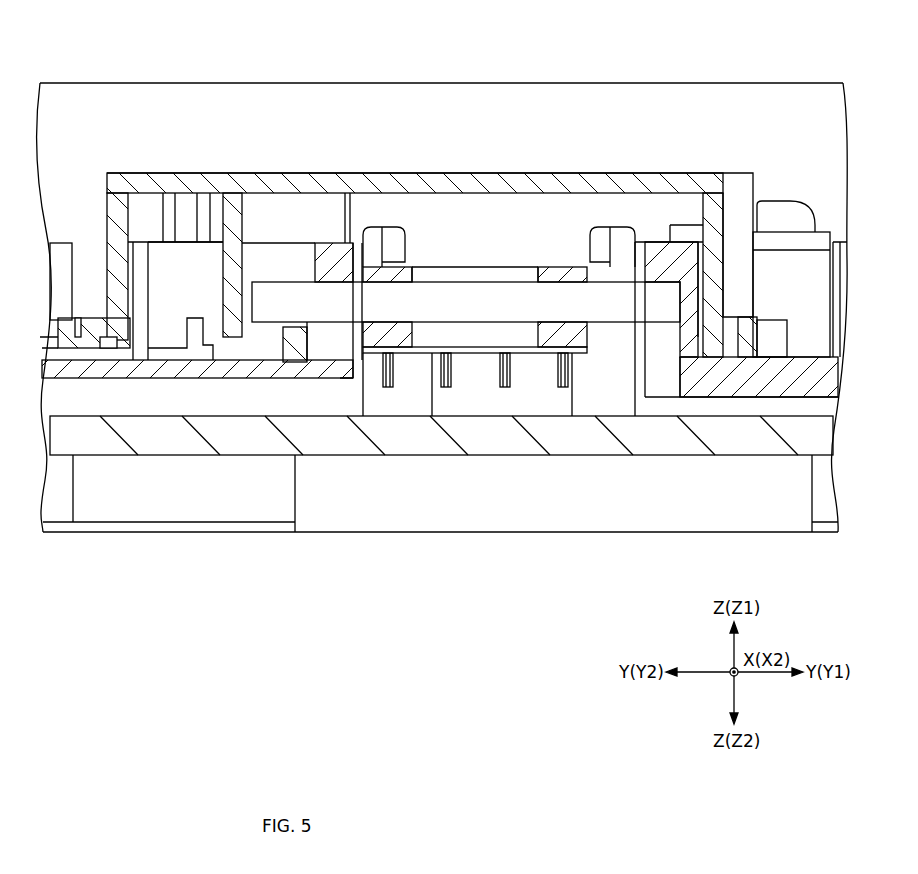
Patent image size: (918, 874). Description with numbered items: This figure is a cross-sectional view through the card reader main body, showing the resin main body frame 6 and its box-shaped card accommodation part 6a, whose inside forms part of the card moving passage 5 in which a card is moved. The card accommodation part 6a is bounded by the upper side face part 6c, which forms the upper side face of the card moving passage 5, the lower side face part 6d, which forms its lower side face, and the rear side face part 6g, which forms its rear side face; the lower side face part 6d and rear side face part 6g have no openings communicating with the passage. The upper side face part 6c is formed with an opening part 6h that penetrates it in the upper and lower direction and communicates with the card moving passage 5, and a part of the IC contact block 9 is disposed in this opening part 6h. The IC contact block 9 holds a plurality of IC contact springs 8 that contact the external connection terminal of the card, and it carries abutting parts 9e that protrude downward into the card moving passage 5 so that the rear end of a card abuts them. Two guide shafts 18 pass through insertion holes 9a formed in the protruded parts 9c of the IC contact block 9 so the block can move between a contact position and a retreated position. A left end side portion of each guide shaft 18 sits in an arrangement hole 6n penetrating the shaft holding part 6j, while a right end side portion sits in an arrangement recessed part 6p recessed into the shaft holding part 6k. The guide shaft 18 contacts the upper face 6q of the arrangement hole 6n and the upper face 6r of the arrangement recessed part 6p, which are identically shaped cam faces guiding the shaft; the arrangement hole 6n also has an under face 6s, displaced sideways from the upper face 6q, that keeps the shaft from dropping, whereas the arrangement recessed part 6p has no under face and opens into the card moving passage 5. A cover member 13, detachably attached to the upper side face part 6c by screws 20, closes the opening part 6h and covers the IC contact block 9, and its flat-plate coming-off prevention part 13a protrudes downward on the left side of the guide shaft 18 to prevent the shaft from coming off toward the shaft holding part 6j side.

The main body frame 6 is at (442, 286).
The card accommodation part 6a is at (296, 83).
The rear side face part 6g is at (653, 83).
The shaft holding part 6j is at (327, 238).
The cover member 13 is at (316, 246).
The coming-off prevention part 13a is at (223, 268).
The shaft holding part 6k is at (659, 243).
The screw 20 is at (790, 202).
The guide shaft 18 is at (458, 280).
The IC contact block 9 is at (504, 281).
The protruded part 9c is at (405, 265).
The insertion hole 9a is at (384, 285).
The under face 6s is at (300, 332).
The arrangement hole 6n is at (291, 316).
The upper face 6q is at (342, 283).
The upper face 6r is at (668, 284).
The upper side face part 6c is at (810, 360).
The arrangement recessed part 6p is at (657, 373).
The opening part 6h is at (356, 382).
The abutting part 9e is at (375, 417).
The IC contact spring 8 is at (388, 388).
The card moving passage 5 is at (716, 406).
The lower side face part 6d is at (750, 456).